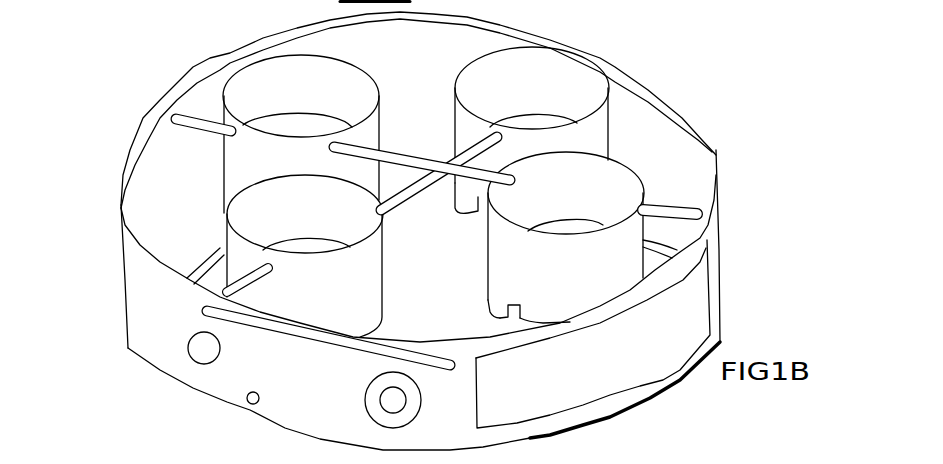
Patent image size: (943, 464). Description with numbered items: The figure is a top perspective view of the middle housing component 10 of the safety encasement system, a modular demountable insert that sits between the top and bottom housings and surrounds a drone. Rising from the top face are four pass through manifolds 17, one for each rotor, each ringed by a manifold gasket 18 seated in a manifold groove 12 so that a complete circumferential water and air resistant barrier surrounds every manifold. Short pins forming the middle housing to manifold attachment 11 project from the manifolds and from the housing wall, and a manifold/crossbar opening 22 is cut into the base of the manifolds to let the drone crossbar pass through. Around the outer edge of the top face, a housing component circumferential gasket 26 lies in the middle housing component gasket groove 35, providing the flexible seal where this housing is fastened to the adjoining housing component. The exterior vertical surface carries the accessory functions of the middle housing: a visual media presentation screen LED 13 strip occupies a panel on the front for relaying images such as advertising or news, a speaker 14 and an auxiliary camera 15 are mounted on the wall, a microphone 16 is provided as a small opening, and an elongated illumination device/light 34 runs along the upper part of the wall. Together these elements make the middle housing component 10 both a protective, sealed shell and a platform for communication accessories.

The middle housing component 10 is at (157, 287).
The middle housing to manifold attachment 11 is at (200, 124).
The manifold groove 12 is at (375, 80).
The visual media presentation screen LED 13 is at (622, 367).
The speaker 14 is at (397, 402).
The auxiliary camera 15 is at (209, 348).
The microphone 16 is at (246, 404).
The pass through manifold 17 is at (268, 171).
The manifold gasket 18 is at (317, 54).
The manifold/crossbar opening 22 is at (478, 217).
The housing component circumferential gasket 26 is at (600, 52).
The illumination device/light 34 is at (337, 353).
The middle housing component gasket groove 35 is at (693, 128).